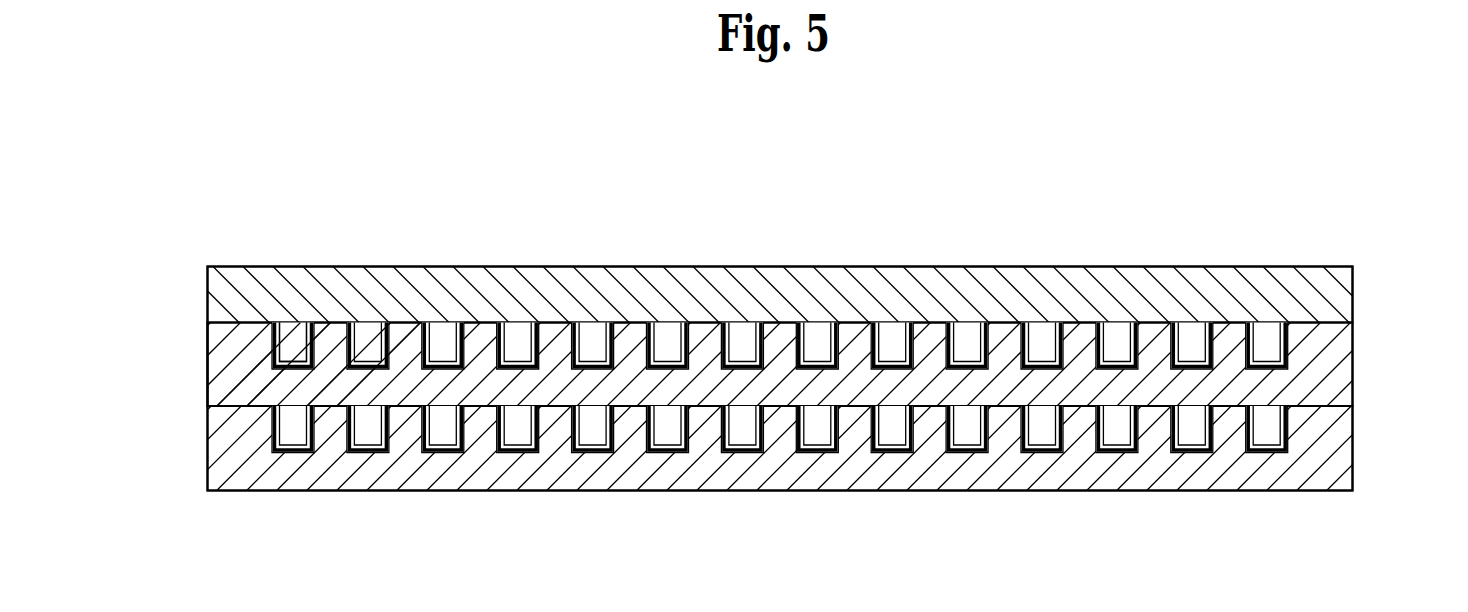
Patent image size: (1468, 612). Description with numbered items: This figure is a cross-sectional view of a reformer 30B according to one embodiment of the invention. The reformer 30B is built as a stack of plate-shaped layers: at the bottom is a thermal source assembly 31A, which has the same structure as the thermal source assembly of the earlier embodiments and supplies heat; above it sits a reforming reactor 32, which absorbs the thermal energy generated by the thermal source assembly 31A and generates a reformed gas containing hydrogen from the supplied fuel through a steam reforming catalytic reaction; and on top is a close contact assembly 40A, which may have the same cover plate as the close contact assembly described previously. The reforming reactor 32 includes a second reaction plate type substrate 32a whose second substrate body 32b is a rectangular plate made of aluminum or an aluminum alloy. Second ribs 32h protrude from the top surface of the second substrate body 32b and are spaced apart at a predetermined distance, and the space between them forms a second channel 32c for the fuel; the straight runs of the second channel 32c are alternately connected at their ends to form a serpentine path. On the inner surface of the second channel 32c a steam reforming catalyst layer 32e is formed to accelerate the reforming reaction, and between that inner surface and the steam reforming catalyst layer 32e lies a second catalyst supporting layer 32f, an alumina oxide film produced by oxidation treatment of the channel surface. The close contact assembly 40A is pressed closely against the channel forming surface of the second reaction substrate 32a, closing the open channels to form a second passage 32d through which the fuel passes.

The reformer 30B is at (802, 167).
The close contact assembly 40A is at (1369, 294).
The reforming reactor 32 is at (1369, 362).
The second reaction plate type substrate 32a is at (195, 382).
The second substrate body 32b is at (207, 366).
The second channel 32c is at (291, 369).
The second passage 32d is at (275, 342).
The steam reforming catalyst layer 32e is at (280, 323).
The second catalyst supporting layer 32f is at (277, 323).
The second ribs 32h is at (335, 330).
The thermal source assembly 31A is at (1369, 450).